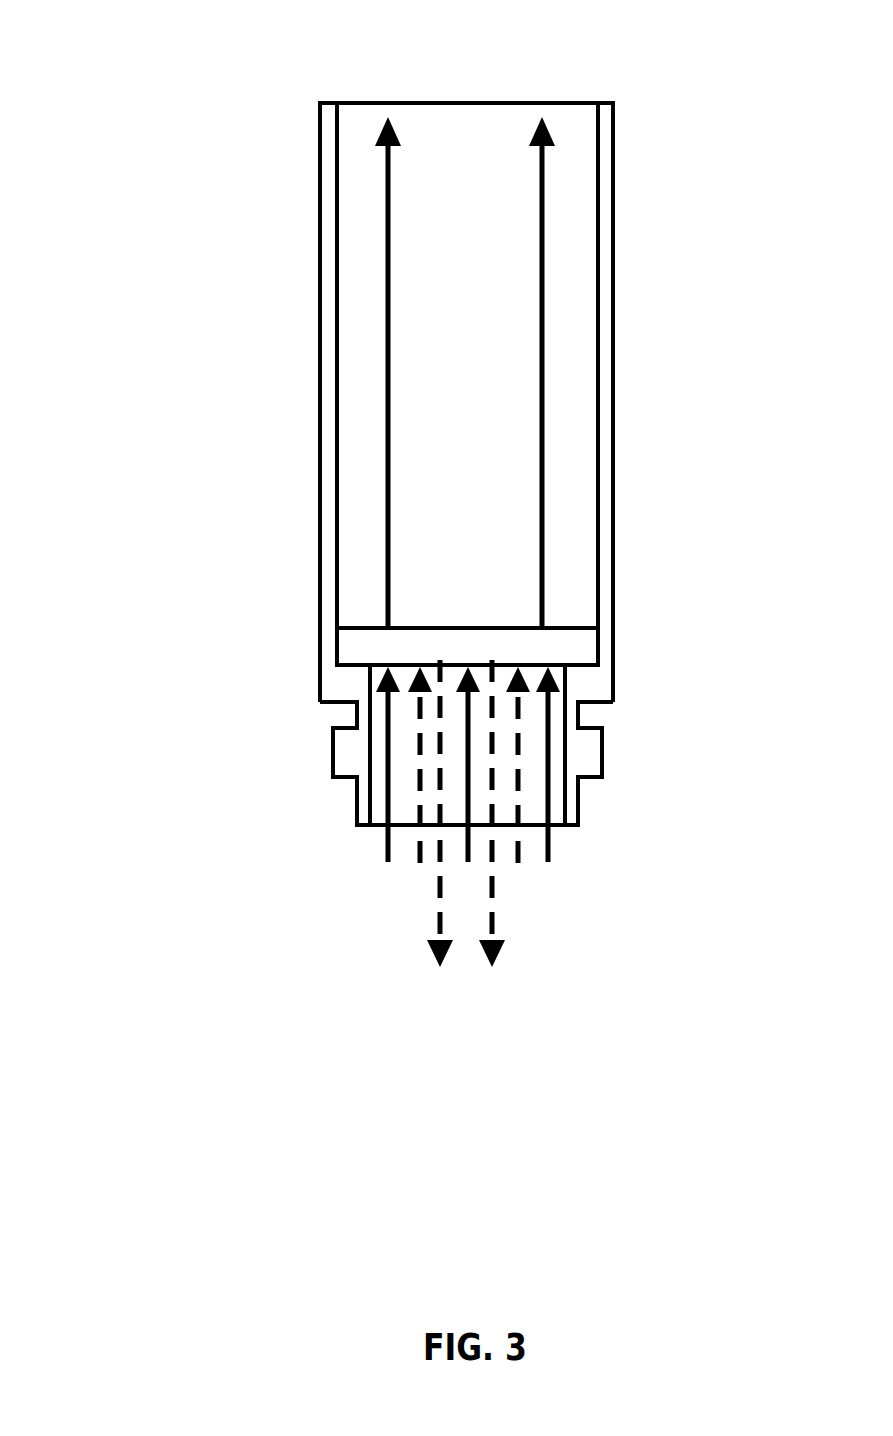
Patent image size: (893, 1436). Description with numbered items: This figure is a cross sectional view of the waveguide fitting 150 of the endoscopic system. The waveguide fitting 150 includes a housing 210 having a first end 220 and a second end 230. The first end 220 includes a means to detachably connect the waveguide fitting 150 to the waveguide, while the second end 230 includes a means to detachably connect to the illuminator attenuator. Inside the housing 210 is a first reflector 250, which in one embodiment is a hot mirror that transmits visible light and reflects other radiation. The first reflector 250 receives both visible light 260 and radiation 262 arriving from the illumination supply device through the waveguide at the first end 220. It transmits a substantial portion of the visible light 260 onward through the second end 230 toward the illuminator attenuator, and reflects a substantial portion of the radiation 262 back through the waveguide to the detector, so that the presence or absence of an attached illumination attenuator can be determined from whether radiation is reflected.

The waveguide fitting 150 is at (399, 491).
The housing 210 is at (615, 335).
The first end 220 is at (580, 813).
The second end 230 is at (468, 103).
The first reflector 250 is at (600, 648).
The visible light 260 is at (542, 445).
The radiation 262 is at (420, 712).